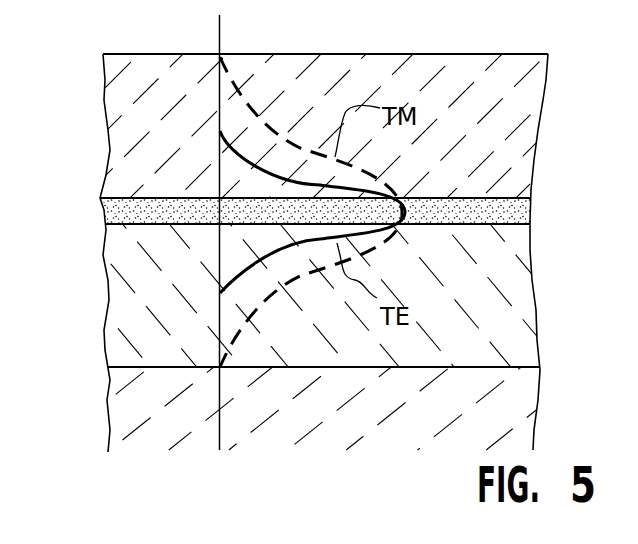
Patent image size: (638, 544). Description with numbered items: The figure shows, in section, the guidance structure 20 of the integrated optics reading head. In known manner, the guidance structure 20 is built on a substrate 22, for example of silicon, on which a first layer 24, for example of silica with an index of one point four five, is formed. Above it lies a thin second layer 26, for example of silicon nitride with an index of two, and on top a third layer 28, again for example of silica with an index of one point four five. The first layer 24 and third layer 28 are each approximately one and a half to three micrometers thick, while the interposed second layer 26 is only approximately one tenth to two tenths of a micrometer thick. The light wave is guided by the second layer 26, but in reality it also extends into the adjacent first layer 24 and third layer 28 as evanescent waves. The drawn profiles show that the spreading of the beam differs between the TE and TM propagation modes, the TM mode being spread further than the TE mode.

The guidance structure 20 is at (65, 59).
The substrate 22 is at (130, 420).
The first layer 24 is at (133, 308).
The second layer 26 is at (107, 211).
The third layer 28 is at (135, 74).